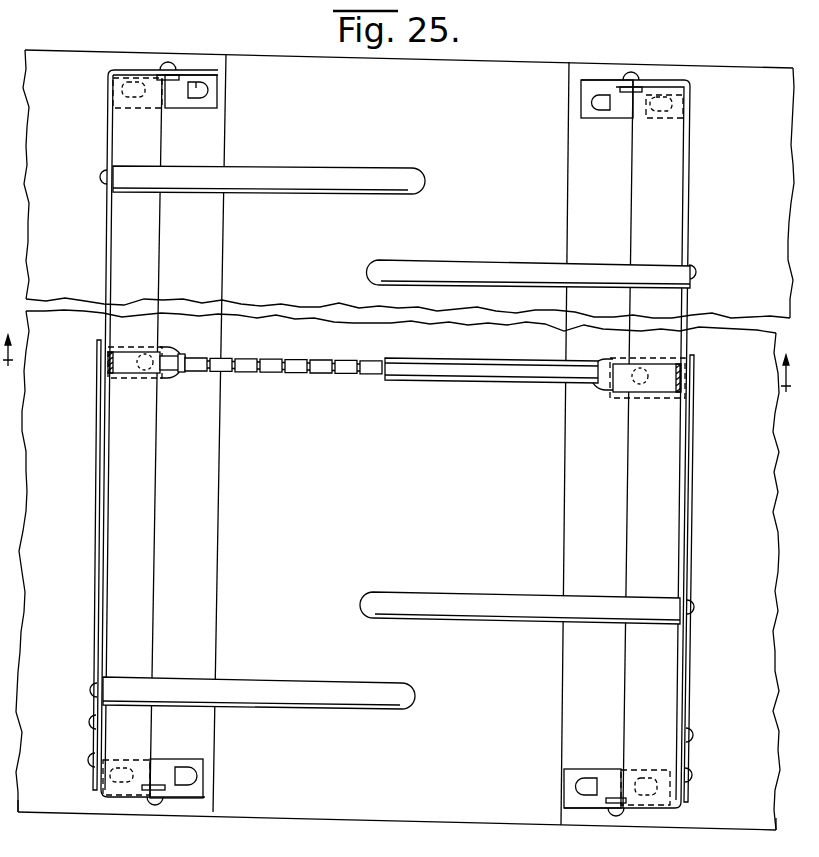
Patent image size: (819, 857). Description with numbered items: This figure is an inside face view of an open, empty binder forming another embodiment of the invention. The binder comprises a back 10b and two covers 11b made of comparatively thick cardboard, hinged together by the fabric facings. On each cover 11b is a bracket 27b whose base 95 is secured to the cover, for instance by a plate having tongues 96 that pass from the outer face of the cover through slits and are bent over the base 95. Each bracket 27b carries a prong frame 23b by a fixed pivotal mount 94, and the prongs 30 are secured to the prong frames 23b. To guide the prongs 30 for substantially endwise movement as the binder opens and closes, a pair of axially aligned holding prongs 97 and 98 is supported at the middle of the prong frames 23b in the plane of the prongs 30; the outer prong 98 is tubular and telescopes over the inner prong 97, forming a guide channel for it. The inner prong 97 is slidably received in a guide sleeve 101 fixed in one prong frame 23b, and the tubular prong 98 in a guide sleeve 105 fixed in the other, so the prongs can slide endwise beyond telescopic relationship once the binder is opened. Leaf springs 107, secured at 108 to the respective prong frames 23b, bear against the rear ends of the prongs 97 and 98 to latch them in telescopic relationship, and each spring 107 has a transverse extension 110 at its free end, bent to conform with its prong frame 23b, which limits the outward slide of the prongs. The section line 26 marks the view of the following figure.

The back 10b is at (428, 810).
The cover 11b is at (58, 797).
The prong frame 23b is at (105, 110).
The section line 26 is at (399, 374).
The bracket 27b is at (207, 70).
The prong 30 is at (401, 262).
The fixed pivotal mount 94 is at (167, 62).
The base 95 is at (216, 104).
The tongue 96 is at (198, 103).
The inner holding prong 97 is at (318, 374).
The outer tubular prong 98 is at (492, 383).
The guide sleeve 101 is at (130, 374).
The guide sleeve 105 is at (664, 392).
The leaf spring 107 is at (97, 428).
The rivet securing point 108 is at (93, 760).
The transverse extension 110 is at (173, 378).